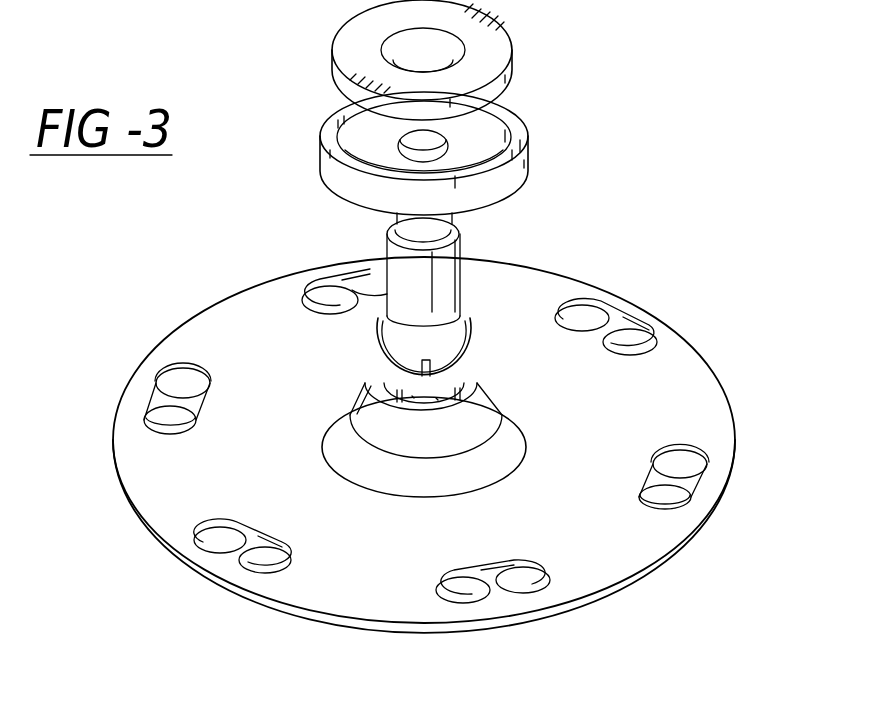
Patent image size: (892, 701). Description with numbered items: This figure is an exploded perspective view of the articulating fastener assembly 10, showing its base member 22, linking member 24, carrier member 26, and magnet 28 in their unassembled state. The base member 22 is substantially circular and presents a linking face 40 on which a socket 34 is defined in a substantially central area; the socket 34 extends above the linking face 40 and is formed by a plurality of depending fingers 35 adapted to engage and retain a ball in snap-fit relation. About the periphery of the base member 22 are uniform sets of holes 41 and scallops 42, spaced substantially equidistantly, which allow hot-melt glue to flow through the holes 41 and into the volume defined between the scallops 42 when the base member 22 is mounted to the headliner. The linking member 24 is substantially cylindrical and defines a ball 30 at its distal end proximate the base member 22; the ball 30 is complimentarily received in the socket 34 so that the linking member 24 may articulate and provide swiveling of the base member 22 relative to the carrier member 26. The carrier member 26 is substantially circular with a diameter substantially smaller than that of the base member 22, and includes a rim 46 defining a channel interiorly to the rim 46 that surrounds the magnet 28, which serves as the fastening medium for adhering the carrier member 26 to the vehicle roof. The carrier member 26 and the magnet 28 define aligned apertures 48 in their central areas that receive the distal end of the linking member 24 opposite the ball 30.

The fastener assembly 10 is at (653, 190).
The base member 22 is at (750, 436).
The linking member 24 is at (473, 274).
The carrier member 26 is at (543, 133).
The magnet 28 is at (348, 43).
The ball 30 is at (471, 338).
The socket 34 is at (364, 396).
The depending fingers 35 is at (424, 398).
The linking face 40 is at (684, 378).
The holes 41 is at (640, 340).
The scallops 42 is at (694, 480).
The rim 46 is at (518, 88).
The aligned apertures 48 is at (398, 144).